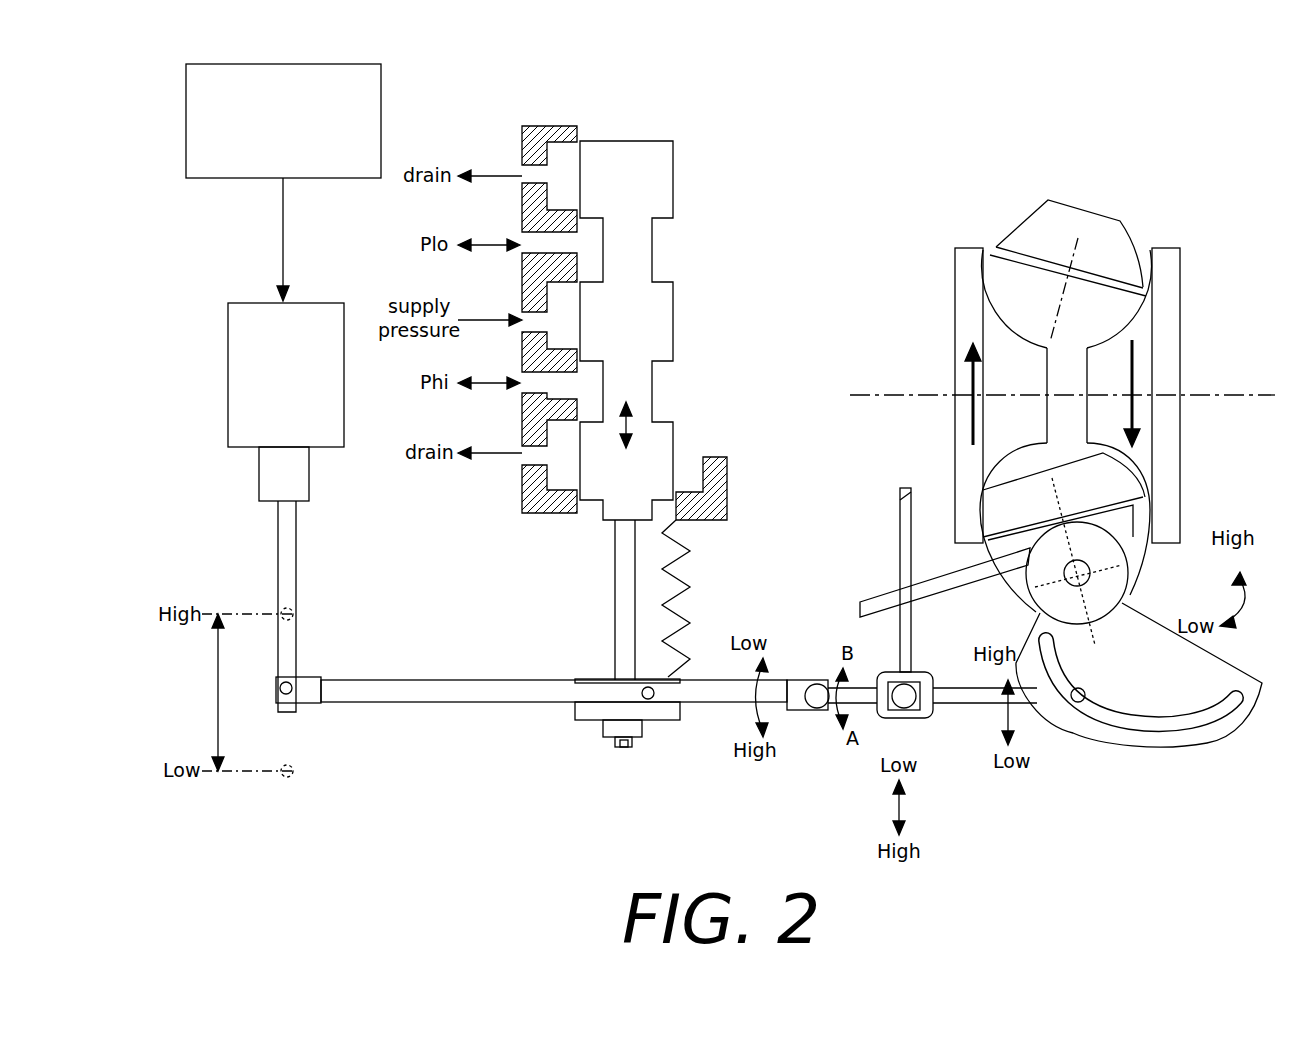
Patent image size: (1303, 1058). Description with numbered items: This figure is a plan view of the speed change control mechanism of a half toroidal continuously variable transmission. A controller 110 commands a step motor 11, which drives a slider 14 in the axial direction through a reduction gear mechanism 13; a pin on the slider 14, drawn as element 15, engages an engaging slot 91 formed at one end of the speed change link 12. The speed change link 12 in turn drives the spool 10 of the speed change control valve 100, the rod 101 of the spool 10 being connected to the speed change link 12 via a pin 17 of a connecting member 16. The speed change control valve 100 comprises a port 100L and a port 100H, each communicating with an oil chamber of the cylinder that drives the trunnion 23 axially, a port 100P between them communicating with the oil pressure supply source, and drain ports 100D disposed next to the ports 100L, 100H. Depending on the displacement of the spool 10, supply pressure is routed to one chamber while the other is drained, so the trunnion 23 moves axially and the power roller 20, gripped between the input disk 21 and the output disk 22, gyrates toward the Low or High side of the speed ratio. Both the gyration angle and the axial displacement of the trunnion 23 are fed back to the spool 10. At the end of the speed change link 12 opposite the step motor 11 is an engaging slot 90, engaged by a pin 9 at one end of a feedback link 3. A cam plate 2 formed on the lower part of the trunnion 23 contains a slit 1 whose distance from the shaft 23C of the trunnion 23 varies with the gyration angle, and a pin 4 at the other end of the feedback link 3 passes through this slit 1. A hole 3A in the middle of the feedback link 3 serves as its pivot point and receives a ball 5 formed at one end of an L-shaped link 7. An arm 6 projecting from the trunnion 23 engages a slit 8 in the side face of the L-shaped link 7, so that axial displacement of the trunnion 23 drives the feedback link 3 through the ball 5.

The slit 1 is at (1160, 728).
The cam plate 2 is at (1211, 752).
The feedback link 3 is at (968, 704).
The hole 3A is at (900, 712).
The pin 4 is at (1078, 703).
The ball 5 is at (918, 719).
The arm 6 is at (943, 598).
The L-shaped link 7 is at (907, 490).
The slit 8 is at (905, 515).
The pin 9 is at (806, 712).
The spool 10 is at (663, 300).
The step motor 11 is at (292, 381).
The speed change link 12 is at (444, 680).
The reduction gear mechanism 13 is at (280, 488).
The slider 14 is at (285, 556).
The pin 15 is at (288, 697).
The connecting member 16 is at (577, 716).
The pin 17 is at (648, 700).
The power roller 20 is at (1003, 277).
The input disk 21 is at (968, 289).
The output disk 22 is at (1175, 292).
The trunnion 23 is at (1113, 222).
The shaft 23C is at (1085, 545).
The engaging slot 90 is at (790, 680).
The engaging slot 91 is at (300, 677).
The speed change control valve 100 is at (626, 396).
The drain ports 100D is at (527, 170).
The port 100L is at (541, 238).
The port 100P is at (542, 318).
The port 100H is at (541, 380).
The rod 101 is at (622, 617).
The controller 110 is at (372, 106).